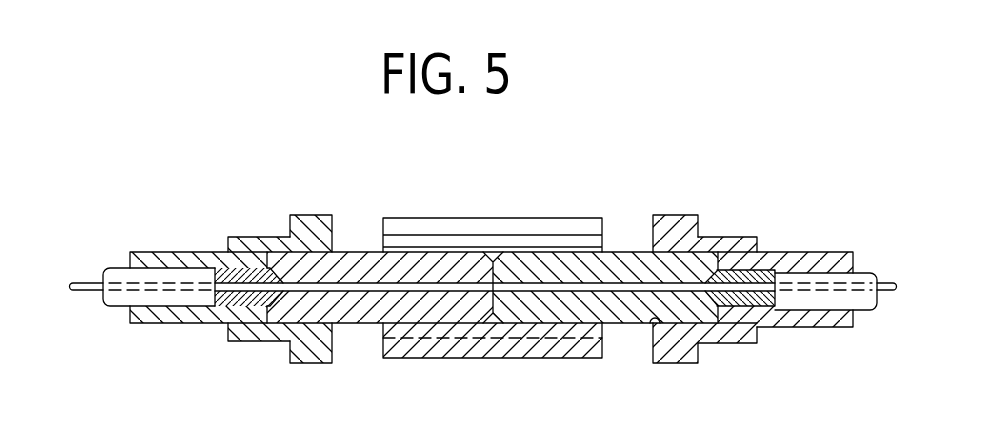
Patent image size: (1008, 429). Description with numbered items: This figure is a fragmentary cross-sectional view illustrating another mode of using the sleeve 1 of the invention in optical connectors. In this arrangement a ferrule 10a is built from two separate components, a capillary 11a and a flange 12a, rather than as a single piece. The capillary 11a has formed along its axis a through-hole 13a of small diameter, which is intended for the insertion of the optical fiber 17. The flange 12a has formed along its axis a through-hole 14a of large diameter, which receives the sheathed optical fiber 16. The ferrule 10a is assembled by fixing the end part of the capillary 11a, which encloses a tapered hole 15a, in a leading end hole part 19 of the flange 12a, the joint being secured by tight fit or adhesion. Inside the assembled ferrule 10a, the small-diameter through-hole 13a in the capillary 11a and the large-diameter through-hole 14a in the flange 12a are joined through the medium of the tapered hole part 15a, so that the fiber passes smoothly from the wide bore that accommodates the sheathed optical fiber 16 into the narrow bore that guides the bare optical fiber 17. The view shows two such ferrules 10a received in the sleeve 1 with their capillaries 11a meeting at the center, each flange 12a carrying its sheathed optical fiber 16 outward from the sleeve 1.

The sleeve 1 is at (481, 212).
The ferrule 10a is at (252, 223).
The capillary 11a is at (357, 252).
The flange 12a is at (139, 252).
The through-hole of small diameter 13a is at (523, 291).
The through-hole of large diameter 14a is at (827, 311).
The tapered hole part 15a is at (729, 312).
The sheathed optical fiber 16 is at (113, 307).
The optical fiber 17 is at (366, 308).
The leading end hole part 19 is at (644, 326).